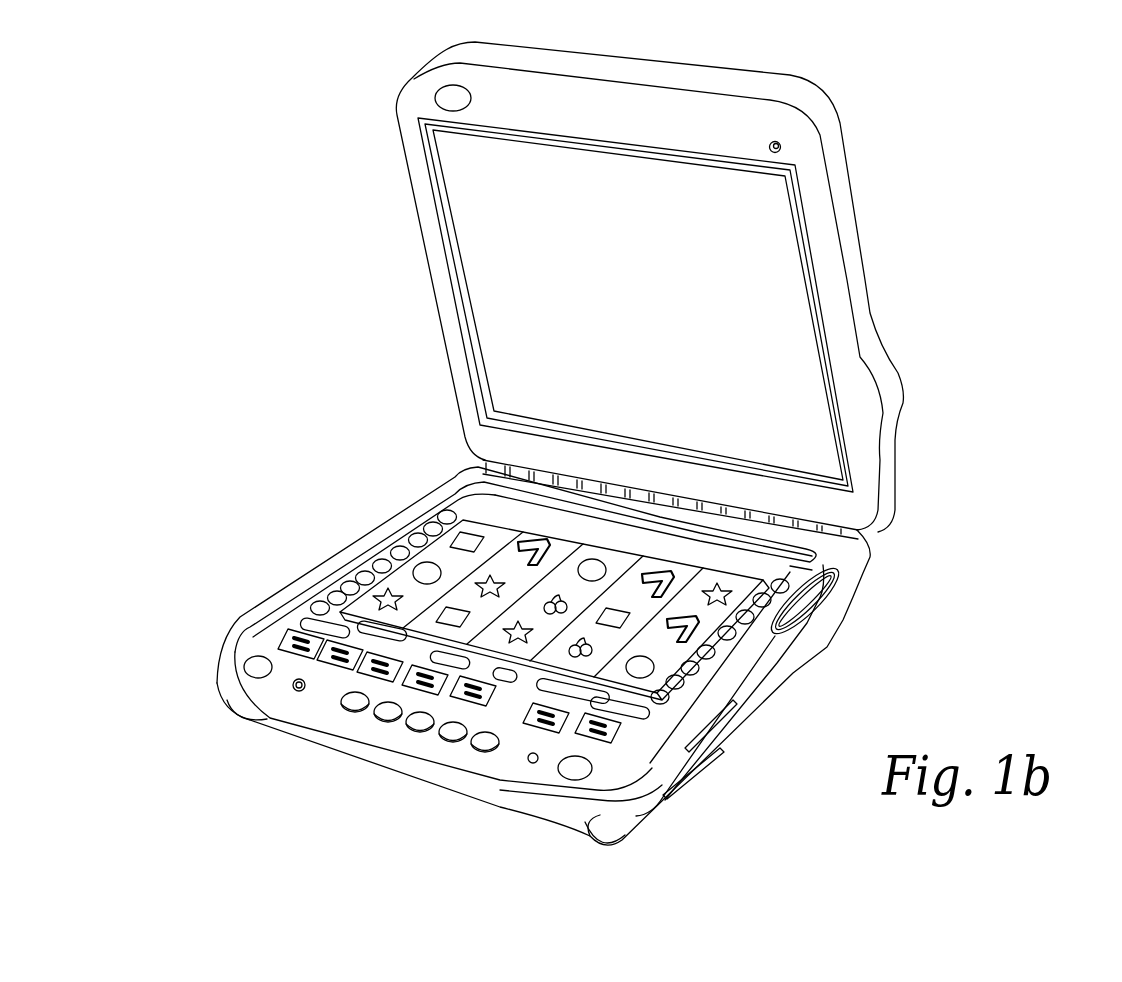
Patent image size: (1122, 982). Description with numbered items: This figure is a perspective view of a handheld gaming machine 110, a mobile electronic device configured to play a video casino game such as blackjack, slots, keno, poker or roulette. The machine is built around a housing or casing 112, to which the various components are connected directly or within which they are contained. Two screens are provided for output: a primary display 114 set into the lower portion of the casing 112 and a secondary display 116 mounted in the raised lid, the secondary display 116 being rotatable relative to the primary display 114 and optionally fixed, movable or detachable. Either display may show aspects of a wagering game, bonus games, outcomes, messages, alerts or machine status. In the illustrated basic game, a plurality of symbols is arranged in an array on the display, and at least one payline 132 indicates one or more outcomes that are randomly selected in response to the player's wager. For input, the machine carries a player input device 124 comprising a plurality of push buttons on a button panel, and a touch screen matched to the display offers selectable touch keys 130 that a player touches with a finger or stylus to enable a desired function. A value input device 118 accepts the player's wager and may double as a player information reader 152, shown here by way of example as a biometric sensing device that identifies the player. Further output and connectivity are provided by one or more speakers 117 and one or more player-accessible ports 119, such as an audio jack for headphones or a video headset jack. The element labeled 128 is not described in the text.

The handheld gaming machine 110 is at (888, 90).
The housing 112 is at (362, 545).
The primary display 114 is at (472, 507).
The secondary display 116 is at (470, 229).
The speakers 117 is at (255, 660).
The value input device 118 is at (700, 732).
The player-accessible ports 119 is at (297, 692).
The player input device 124 is at (380, 715).
The speaker / port 128 is at (795, 563).
The touch keys 130 is at (485, 748).
The payline 132 is at (733, 647).
The player information reader 152 is at (813, 593).